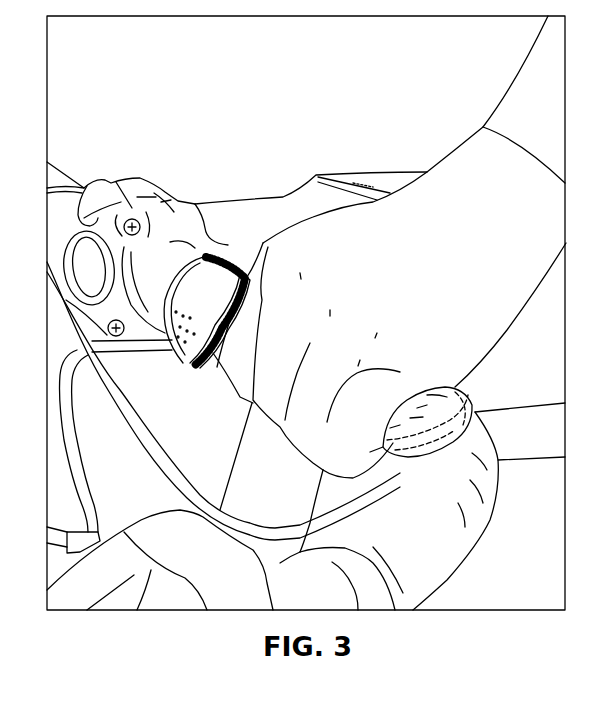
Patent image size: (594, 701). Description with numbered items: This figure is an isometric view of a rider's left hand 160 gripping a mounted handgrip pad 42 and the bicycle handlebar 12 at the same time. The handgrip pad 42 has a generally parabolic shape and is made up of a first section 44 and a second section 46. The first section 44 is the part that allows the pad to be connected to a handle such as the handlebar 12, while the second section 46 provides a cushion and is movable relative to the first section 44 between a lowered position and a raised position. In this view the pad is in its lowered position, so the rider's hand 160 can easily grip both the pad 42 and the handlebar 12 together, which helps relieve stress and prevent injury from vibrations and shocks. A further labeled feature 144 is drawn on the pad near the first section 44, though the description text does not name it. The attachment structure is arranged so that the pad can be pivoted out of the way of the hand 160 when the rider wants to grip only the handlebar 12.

The handlebar 12 is at (470, 560).
The handgrip pad 42 is at (482, 398).
The first section 44 is at (197, 290).
The second section 46 is at (433, 425).
The textured gripping surface 144 is at (192, 360).
The rider's hand 160 is at (408, 270).